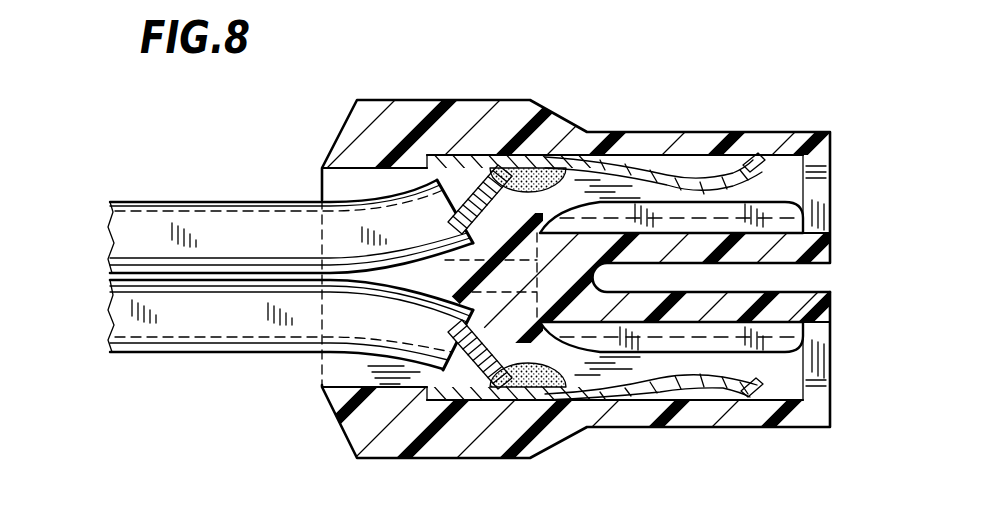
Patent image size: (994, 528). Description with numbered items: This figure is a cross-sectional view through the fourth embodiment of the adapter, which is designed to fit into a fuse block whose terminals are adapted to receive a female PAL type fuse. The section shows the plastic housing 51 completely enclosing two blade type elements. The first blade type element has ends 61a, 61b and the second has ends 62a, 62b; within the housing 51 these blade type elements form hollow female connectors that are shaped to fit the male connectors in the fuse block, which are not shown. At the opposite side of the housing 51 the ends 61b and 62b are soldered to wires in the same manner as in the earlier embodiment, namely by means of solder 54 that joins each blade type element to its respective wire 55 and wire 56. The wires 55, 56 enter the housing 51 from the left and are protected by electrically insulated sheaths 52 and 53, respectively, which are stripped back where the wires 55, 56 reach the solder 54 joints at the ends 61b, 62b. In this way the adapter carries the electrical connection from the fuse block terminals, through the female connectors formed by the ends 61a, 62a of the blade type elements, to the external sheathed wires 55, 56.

The plastic housing 51 is at (511, 112).
The electrically insulated sheath 52 is at (210, 220).
The electrically insulated sheath 53 is at (237, 317).
The solder 54 is at (577, 158).
The wire 55 is at (488, 170).
The wire 56 is at (361, 457).
The end of blade type element 61a is at (782, 217).
The end of blade type element 61b is at (545, 152).
The end of blade type element 62a is at (782, 345).
The end of blade type element 62b is at (352, 413).